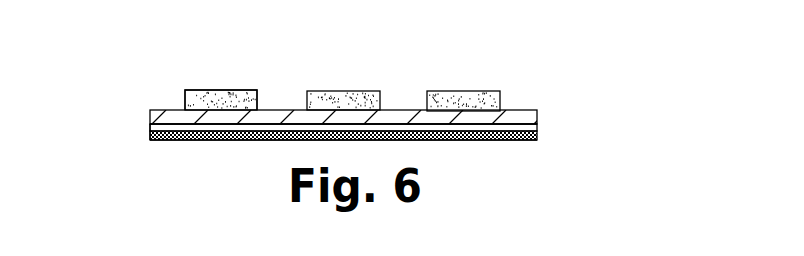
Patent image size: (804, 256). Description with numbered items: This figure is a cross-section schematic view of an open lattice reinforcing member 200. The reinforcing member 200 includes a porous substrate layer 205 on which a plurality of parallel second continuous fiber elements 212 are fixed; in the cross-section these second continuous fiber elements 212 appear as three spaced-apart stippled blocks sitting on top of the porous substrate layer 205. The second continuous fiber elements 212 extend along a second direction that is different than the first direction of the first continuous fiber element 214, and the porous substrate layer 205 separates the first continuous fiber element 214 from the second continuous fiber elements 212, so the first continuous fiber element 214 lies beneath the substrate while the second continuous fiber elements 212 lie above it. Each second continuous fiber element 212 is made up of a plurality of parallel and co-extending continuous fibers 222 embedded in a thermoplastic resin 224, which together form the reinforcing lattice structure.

The open lattice reinforcing member 200 is at (560, 67).
The porous substrate layer 205 is at (150, 122).
The second continuous fiber elements 212 is at (242, 90).
The first continuous fiber element 214 is at (537, 139).
The continuous fibers 222 is at (185, 98).
The thermoplastic resin 224 is at (205, 90).